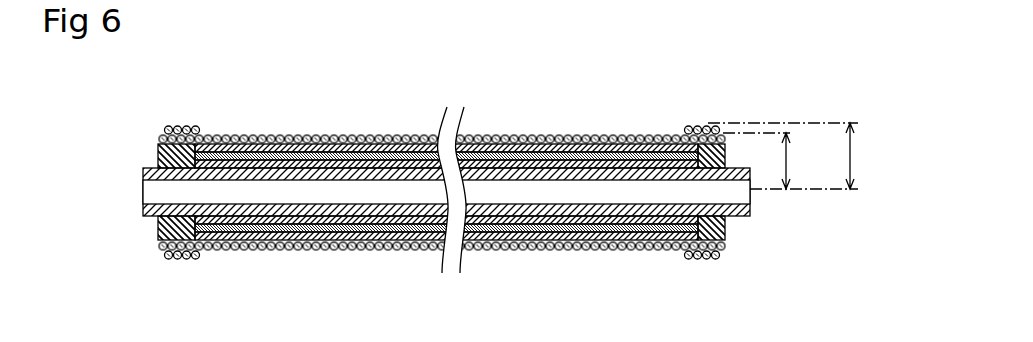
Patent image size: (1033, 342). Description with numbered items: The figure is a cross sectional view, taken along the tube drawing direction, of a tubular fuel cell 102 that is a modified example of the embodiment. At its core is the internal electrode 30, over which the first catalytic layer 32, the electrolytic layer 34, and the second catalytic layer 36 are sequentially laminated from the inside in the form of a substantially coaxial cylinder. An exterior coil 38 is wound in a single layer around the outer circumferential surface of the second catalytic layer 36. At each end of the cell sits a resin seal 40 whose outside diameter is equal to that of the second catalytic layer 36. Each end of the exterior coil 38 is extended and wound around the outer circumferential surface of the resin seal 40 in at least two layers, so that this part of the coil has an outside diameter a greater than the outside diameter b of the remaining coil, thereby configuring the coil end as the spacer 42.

The internal electrode 30 is at (424, 136).
The first catalytic layer 32 is at (405, 147).
The electrolytic layer 34 is at (358, 150).
The second catalytic layer 36 is at (308, 137).
The exterior coil 38 is at (494, 136).
The resin seal 40 is at (157, 157).
The spacer 42 is at (168, 127).
The tubular fuel cell 102 is at (417, 336).